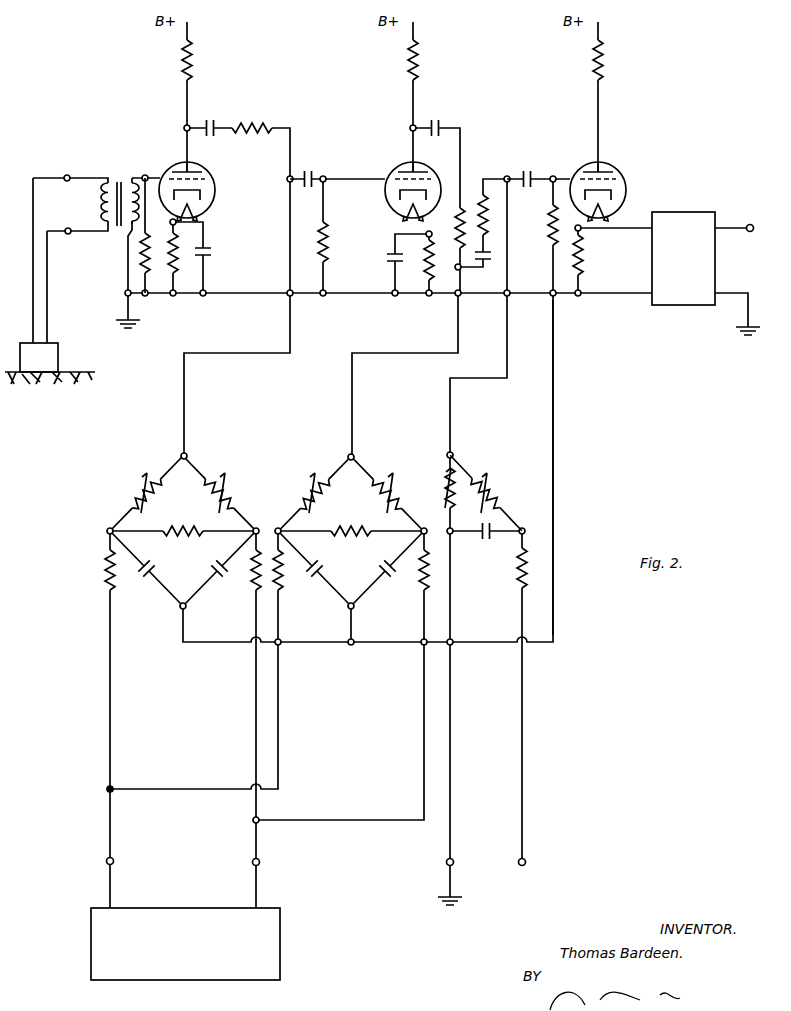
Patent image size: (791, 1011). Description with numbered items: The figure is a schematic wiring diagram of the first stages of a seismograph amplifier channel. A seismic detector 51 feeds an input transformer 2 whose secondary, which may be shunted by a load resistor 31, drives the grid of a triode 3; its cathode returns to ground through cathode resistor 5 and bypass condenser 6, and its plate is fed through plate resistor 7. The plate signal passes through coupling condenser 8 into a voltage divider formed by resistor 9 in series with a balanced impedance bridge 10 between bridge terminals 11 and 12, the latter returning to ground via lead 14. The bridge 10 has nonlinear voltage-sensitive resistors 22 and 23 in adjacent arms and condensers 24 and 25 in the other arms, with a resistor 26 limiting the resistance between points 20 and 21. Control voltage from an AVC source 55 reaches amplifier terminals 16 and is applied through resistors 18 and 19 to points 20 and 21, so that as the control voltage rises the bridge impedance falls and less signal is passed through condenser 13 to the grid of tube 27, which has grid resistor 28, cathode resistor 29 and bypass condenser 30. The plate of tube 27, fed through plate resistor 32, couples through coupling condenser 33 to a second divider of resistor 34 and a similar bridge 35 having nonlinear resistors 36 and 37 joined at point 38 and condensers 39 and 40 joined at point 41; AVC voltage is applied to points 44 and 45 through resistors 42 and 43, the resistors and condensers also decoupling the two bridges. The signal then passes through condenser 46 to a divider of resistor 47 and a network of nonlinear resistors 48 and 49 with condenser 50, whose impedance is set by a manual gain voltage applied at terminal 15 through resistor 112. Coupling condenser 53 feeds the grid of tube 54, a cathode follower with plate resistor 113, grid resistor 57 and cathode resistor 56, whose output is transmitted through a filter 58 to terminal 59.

The input transformer 2 is at (117, 182).
The triode 3 is at (169, 167).
The cathode resistor 5 is at (173, 266).
The bypass condenser 6 is at (210, 249).
The plate resistor 7 is at (186, 60).
The coupling condenser 8 is at (212, 121).
The resistor 9 is at (252, 123).
The balanced impedance bridge 10 is at (170, 541).
The bridge terminal 11 is at (180, 459).
The bridge terminal 12 is at (180, 609).
The condenser 13 is at (307, 170).
The lead 14 is at (553, 452).
The terminal 15 is at (519, 860).
The amplifier terminals 16 is at (114, 861).
The resistor 18 is at (108, 575).
The resistor 19 is at (254, 586).
The bridge point 20 is at (108, 534).
The bridge point 21 is at (258, 528).
The nonlinear voltage-sensitive resistor 22 is at (140, 498).
The nonlinear voltage-sensitive resistor 23 is at (228, 488).
The condenser 24 is at (159, 566).
The condenser 25 is at (222, 565).
The resistor 26 is at (180, 534).
The tube 27 is at (388, 204).
The grid resistor 28 is at (326, 240).
The cathode resistor 29 is at (417, 264).
The bypass condenser 30 is at (392, 262).
The load resistor 31 is at (143, 254).
The plate resistor 32 is at (410, 64).
The coupling condenser 33 is at (446, 125).
The resistor 34 is at (462, 238).
The balanced impedance bridge 35 is at (353, 523).
The nonlinear voltage-sensitive resistor 36 is at (312, 488).
The nonlinear voltage-sensitive resistor 37 is at (398, 488).
The bridge point 38 is at (355, 457).
The condenser 39 is at (323, 563).
The condenser 40 is at (382, 566).
The bridge point 41 is at (355, 607).
The resistor 42 is at (283, 591).
The resistor 43 is at (423, 589).
The bridge point 44 is at (282, 528).
The bridge point 45 is at (426, 528).
The condenser 46 is at (490, 268).
The resistor 47 is at (488, 209).
The nonlinear voltage-sensitive resistor 48 is at (458, 486).
The nonlinear voltage-sensitive resistor 49 is at (491, 490).
The condenser 50 is at (488, 546).
The seismic detector 51 is at (58, 352).
The coupling condenser 53 is at (530, 170).
The tube 54 is at (618, 165).
The AVC source 55 is at (282, 912).
The cathode resistor 56 is at (583, 253).
The grid resistor 57 is at (552, 236).
The filter 58 is at (683, 212).
The terminal 59 is at (752, 226).
The resistor 112 is at (521, 578).
The resistor 113 is at (605, 58).